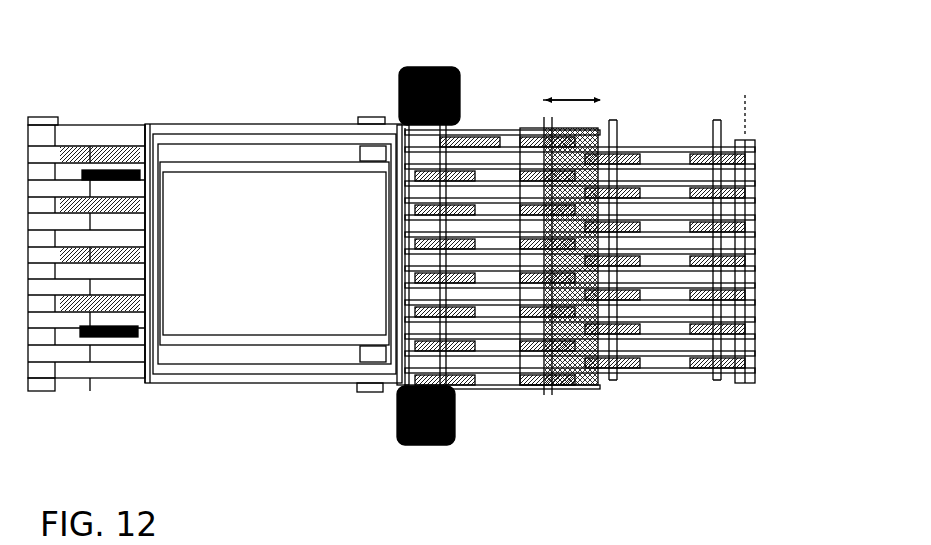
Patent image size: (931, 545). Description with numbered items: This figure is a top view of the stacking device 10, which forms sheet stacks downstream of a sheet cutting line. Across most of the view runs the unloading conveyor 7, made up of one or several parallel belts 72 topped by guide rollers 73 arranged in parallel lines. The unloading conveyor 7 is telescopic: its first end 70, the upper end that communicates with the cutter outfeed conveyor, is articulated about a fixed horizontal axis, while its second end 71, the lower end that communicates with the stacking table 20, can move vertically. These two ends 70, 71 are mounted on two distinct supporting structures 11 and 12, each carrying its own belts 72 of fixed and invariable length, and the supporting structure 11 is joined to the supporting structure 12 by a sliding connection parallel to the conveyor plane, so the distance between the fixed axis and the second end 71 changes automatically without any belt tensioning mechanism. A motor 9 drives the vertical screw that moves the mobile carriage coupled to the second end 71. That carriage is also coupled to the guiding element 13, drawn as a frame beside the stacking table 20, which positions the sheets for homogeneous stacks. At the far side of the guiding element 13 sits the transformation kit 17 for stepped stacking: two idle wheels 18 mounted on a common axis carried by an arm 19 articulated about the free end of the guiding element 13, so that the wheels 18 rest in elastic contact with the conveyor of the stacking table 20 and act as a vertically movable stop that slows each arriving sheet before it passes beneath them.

The unloading conveyor 7 is at (622, 98).
The motor 9 is at (452, 68).
The stacking device 10 is at (305, 95).
The supporting structure 11 is at (490, 127).
The supporting structure 12 is at (677, 138).
The guiding element 13 is at (238, 384).
The transformation kit 17 is at (91, 348).
The idle wheels 18 is at (88, 165).
The arm 19 is at (143, 145).
The stacking table 20 is at (50, 122).
The first end 70 is at (742, 395).
The second end 71 is at (412, 383).
The parallel belts 72 is at (505, 378).
The guide rollers 73 is at (556, 392).